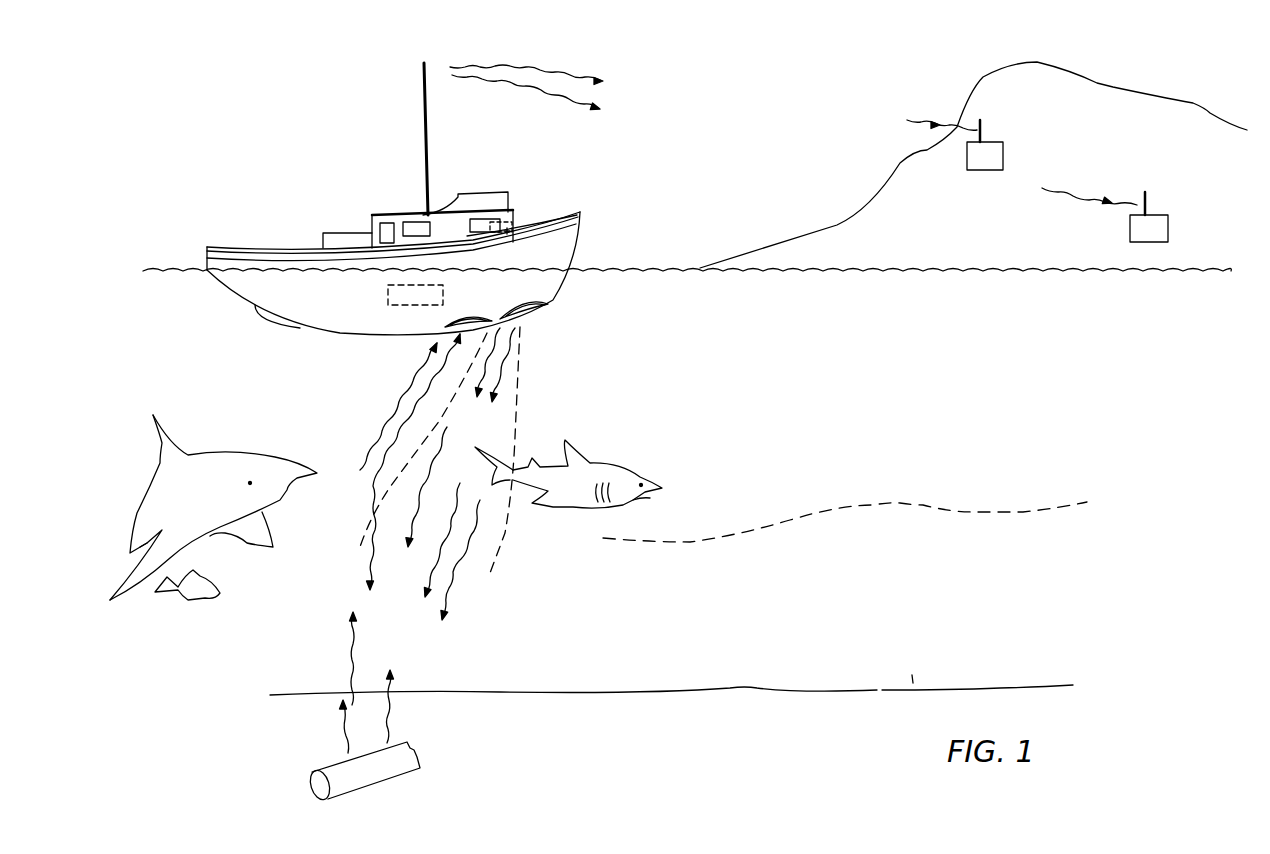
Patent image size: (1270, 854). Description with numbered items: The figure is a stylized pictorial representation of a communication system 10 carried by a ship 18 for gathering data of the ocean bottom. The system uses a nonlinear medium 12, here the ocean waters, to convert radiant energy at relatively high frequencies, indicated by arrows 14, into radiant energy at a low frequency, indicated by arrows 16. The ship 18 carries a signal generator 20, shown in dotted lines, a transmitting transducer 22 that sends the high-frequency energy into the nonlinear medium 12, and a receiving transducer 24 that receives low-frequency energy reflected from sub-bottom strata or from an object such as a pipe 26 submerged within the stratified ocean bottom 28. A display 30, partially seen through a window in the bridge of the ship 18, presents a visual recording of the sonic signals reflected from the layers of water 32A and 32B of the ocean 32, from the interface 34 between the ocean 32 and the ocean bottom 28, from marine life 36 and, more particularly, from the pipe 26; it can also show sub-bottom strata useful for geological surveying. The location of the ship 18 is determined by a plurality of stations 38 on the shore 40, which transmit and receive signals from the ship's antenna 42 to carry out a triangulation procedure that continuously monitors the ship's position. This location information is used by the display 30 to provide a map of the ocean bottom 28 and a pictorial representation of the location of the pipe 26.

The communication system 10 is at (277, 405).
The nonlinear medium 12 is at (517, 430).
The arrows indicating high frequency radiant energy 14 is at (493, 388).
The arrows indicating low frequency radiant energy 16 is at (421, 507).
The ship 18 is at (227, 247).
The signal generator 20 is at (388, 297).
The transmitting transducer 22 is at (543, 307).
The receiving transducer 24 is at (487, 317).
The pipe 26 is at (397, 773).
The ocean bottom 28 is at (586, 754).
The display 30 is at (537, 224).
The ocean 32 is at (908, 263).
The layer of water 32A is at (968, 479).
The layer of water 32B is at (921, 541).
The interface 34 is at (727, 690).
The marine life 36 is at (617, 473).
The stations 38 is at (1002, 158).
The shore 40 is at (978, 231).
The antenna 42 is at (423, 116).